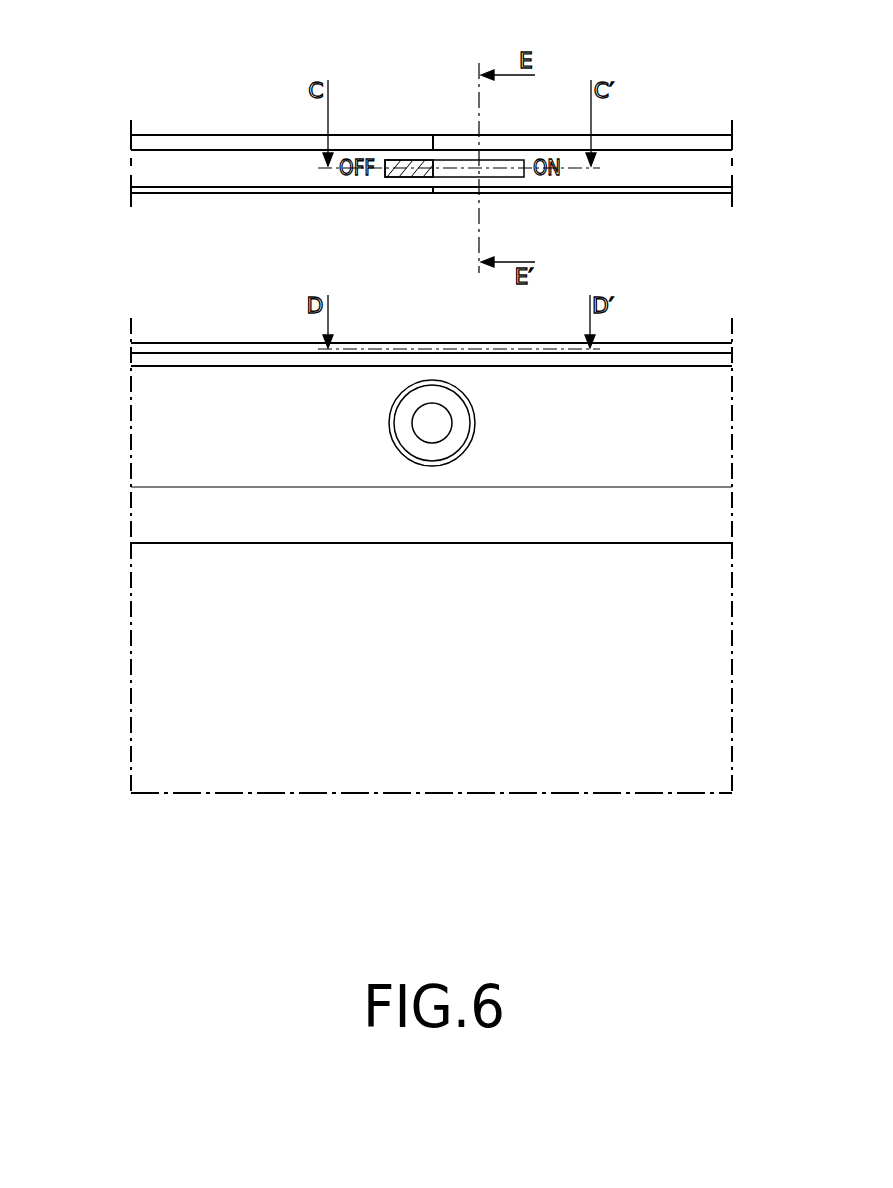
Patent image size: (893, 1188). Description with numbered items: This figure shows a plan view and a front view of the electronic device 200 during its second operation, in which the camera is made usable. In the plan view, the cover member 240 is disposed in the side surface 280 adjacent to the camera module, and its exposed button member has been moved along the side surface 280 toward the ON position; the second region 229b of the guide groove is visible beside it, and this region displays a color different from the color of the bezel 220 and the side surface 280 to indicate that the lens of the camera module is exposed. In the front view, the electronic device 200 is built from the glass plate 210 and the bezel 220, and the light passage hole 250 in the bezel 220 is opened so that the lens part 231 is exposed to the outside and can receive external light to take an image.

The electronic device 200 is at (710, 94).
The side surface 280 is at (663, 165).
The second region 229b is at (413, 160).
The cover member 240 is at (513, 163).
The bezel 220 is at (162, 413).
The lens part 231 is at (418, 417).
The light passage hole 250 is at (388, 427).
The glass plate 210 is at (162, 587).